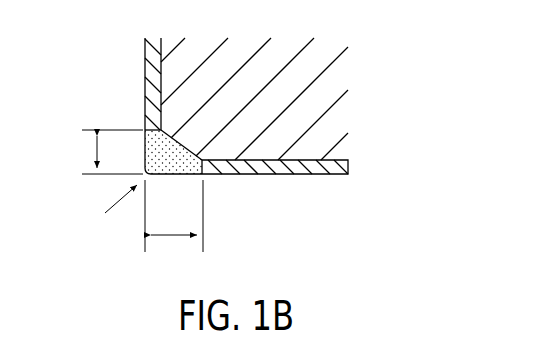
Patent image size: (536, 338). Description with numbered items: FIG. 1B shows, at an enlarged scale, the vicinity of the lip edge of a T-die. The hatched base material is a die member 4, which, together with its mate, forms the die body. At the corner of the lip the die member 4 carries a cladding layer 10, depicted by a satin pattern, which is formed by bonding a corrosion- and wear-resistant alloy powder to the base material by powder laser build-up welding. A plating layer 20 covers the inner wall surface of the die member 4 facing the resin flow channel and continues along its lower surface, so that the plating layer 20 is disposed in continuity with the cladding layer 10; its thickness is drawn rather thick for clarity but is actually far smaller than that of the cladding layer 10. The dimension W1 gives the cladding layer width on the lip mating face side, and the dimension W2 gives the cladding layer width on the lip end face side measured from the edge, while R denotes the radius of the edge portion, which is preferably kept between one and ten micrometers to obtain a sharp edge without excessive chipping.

The plating layer 20 is at (150, 72).
The cladding layer 10 is at (186, 175).
The die member 4 is at (335, 82).
The cladding layer width on the lip mating face side W1 is at (100, 152).
The cladding layer width on the lip end face side W2 is at (174, 225).
The edge radius R is at (111, 208).